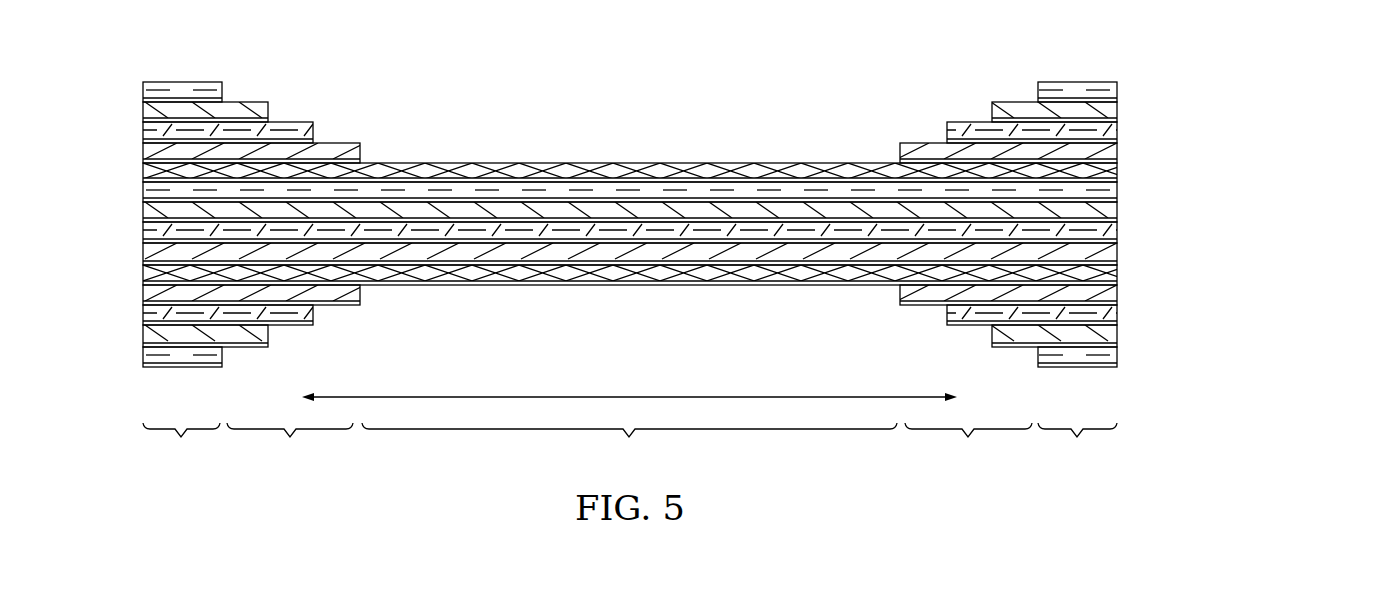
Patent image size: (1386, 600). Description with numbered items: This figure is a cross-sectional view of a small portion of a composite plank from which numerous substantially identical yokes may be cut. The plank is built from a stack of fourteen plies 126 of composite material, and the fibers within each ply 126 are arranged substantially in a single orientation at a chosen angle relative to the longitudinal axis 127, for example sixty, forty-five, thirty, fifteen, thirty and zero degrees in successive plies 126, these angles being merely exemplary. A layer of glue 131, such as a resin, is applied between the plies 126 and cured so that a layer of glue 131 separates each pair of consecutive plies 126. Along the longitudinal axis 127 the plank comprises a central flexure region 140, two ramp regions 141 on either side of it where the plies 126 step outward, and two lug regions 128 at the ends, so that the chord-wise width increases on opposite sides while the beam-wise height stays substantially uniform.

The ply 126 is at (1163, 78).
The glue 131 is at (143, 120).
The longitudinal axis 127 is at (630, 397).
The flexure region 140 is at (629, 445).
The ramp region 141 is at (629, 445).
The lug region 128 is at (630, 445).